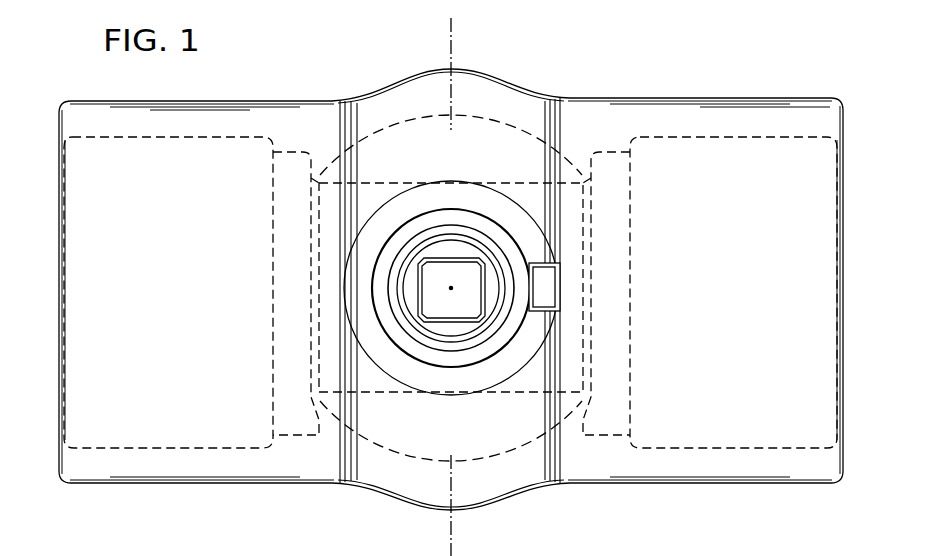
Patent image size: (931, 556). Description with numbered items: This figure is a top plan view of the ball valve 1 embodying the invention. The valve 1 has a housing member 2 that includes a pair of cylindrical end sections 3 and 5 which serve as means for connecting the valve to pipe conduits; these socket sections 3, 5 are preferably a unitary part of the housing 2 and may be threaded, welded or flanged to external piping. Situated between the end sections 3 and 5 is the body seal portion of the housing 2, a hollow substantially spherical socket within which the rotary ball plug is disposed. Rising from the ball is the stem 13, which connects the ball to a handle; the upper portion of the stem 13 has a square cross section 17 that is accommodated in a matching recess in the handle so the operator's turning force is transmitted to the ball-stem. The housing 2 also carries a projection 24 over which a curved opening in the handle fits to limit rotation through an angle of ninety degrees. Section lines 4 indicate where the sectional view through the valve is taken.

The valve 1 is at (457, 287).
The housing member 2 is at (367, 488).
The cylindrical end section 3 is at (198, 381).
The section line 4- 4 is at (437, 36).
The cylindrical end section 5 is at (772, 373).
The stem 13 is at (470, 226).
The square cross section 17 is at (437, 307).
The projection on the housing 24 is at (553, 281).